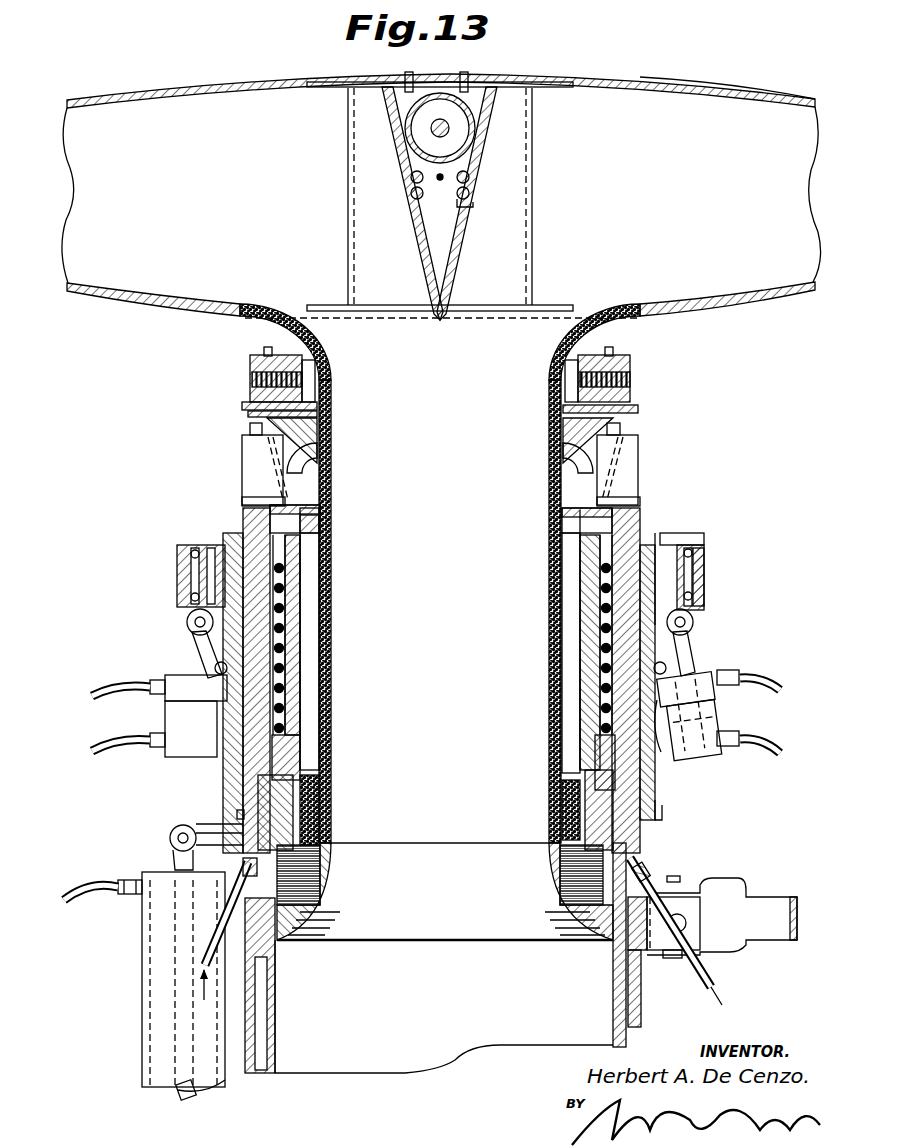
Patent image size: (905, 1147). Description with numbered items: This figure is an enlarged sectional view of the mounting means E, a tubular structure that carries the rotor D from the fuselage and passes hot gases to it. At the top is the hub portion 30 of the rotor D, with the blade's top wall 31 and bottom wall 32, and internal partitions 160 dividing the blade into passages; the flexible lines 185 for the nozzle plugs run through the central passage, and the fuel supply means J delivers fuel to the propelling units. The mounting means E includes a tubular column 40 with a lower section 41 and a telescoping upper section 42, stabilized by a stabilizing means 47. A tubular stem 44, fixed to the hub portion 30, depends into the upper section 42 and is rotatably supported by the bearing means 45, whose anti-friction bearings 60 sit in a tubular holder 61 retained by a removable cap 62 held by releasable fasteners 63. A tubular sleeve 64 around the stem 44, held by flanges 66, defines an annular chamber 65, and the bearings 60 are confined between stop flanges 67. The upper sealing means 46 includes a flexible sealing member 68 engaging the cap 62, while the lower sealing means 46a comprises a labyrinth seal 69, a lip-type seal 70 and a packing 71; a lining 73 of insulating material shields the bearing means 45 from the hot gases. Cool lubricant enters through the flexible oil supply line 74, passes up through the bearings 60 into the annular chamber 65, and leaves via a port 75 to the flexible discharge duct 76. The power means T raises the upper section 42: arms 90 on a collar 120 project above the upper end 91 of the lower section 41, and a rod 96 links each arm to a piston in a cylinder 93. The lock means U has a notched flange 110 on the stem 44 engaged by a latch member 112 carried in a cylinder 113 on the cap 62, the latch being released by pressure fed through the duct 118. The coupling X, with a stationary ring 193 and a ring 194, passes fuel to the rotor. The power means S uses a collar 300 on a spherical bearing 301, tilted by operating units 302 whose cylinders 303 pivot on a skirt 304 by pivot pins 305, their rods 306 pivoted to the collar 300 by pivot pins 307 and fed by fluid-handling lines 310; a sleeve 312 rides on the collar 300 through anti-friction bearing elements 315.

The hub portion 30 is at (500, 80).
The top wall 31 is at (750, 95).
The bottom wall 32 is at (730, 303).
The rotor D is at (676, 78).
The fuel supply means J is at (457, 207).
The flexible lines 185 is at (472, 190).
The internal partitions 160 is at (347, 247).
The tubular column 40 is at (321, 1052).
The lower section 41 is at (647, 1003).
The upper section 42 is at (616, 974).
The tubular stem 44 is at (326, 443).
The bearing means 45 is at (592, 637).
The upper sealing means 46 is at (303, 512).
The lower sealing means 46a is at (330, 871).
The stabilizing means 47 is at (722, 896).
The anti-friction bearings 60 is at (293, 583).
The tubular holder 61 is at (283, 642).
The removable cap 62 is at (243, 516).
The releasable fasteners 63 is at (252, 500).
The tubular sleeve 64 is at (293, 667).
The annular chamber 65 is at (310, 688).
The flanges 66 is at (323, 773).
The stop flanges 67 is at (303, 723).
The flexible sealing member 68 is at (280, 505).
The labyrinth seal 69 is at (313, 893).
The lip-type seal 70 is at (267, 777).
The packing 71 is at (333, 807).
The lining 73 is at (333, 610).
The flexible oil supply line 74 is at (212, 930).
The port 75 is at (627, 770).
The flexible discharge duct 76 is at (687, 933).
The arms 90 is at (207, 824).
The upper end 91 is at (665, 869).
The cylinder 93 is at (145, 1028).
The rod 96 is at (170, 1103).
The flange 110 is at (633, 395).
The latch member 112 is at (627, 430).
The cylinder 113 is at (627, 477).
The duct 118 is at (557, 450).
The collar 120 is at (243, 822).
The stationary ring 193 is at (250, 395).
The ring 194 is at (632, 362).
The collar 300 is at (704, 559).
The bearing 301 is at (660, 538).
The operating units 302 is at (722, 716).
The cylinder 303 is at (717, 757).
The skirt 304 is at (690, 639).
The pivot pin 305 is at (666, 727).
The rod 306 is at (690, 661).
The pivot pin 307 is at (684, 623).
The fluid-handling lines 310 is at (760, 677).
The sleeve 312 is at (698, 578).
The anti-friction bearing elements 315 is at (700, 537).
The power means S is at (172, 577).
The power means T is at (140, 976).
The lock means U is at (240, 440).
The coupling X is at (248, 372).
The mounting means E is at (652, 794).